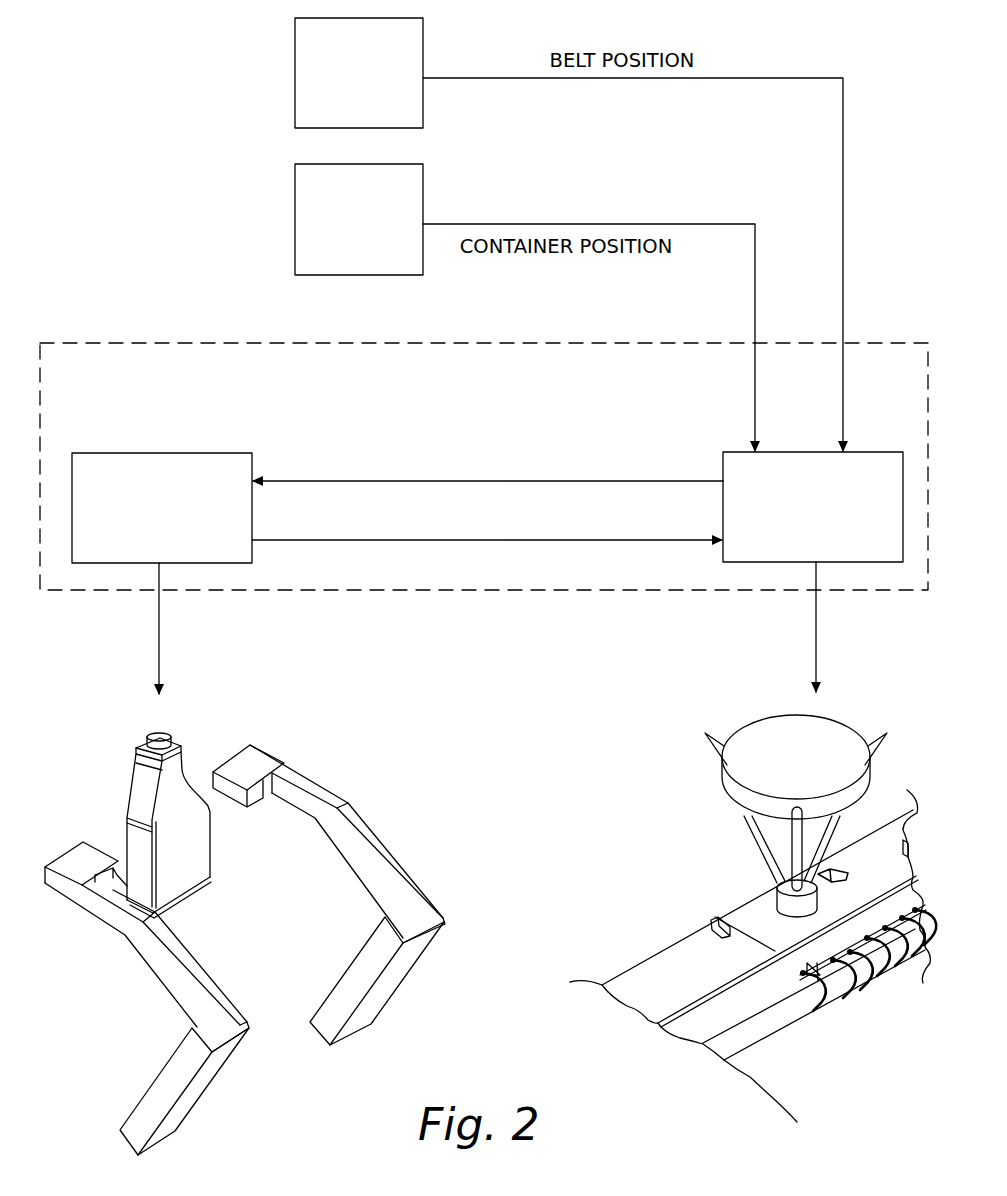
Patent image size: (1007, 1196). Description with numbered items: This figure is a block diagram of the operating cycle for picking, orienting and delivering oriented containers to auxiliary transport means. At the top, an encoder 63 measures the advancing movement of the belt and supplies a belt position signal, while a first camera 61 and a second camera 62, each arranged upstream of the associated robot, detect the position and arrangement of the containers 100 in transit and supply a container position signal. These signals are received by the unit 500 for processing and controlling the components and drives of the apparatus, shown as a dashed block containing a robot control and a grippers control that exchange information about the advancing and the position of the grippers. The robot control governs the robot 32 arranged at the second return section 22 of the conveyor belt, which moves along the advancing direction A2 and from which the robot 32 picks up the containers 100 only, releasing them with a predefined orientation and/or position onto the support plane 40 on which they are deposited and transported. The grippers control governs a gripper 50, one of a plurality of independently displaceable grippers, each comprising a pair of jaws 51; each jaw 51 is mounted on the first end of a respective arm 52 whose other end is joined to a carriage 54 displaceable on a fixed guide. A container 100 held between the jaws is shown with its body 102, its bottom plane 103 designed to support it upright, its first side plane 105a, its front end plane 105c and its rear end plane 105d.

The encoder 63 is at (312, 105).
The first camera 61 is at (363, 246).
The second camera 62 is at (357, 237).
The processing and control unit 500 is at (512, 393).
The gripper 50 is at (410, 835).
The jaw 51 is at (100, 858).
The arm 52 is at (157, 948).
The carriage 54 is at (205, 1075).
The body of the container 102 is at (158, 738).
The bottom plane 103 is at (192, 897).
The first side plane 105a is at (207, 840).
The front end plane 105c is at (207, 822).
The rear end plane 105d is at (143, 793).
The robot 32 is at (823, 767).
The container 100 is at (837, 872).
The second return section 22 is at (625, 985).
The support plane 40 is at (718, 1038).
The advancing direction A2 is at (901, 868).